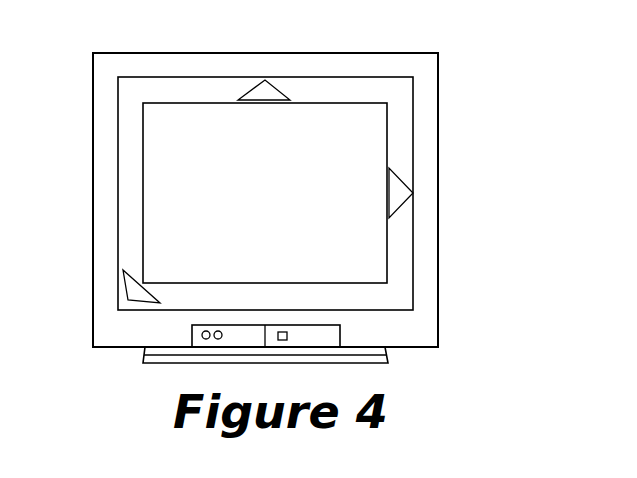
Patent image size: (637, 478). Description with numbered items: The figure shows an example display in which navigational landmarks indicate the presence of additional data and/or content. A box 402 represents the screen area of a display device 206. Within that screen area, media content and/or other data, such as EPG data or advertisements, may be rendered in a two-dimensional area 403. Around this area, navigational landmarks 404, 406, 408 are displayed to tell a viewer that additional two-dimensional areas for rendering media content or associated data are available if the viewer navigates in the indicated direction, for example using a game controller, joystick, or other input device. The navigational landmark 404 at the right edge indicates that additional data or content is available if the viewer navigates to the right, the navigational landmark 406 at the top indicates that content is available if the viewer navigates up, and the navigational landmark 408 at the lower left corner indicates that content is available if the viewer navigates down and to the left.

The screen area 402 is at (403, 128).
The two-dimensional area 403 is at (162, 282).
The navigational landmark 404 is at (402, 192).
The navigational landmark 406 is at (265, 92).
The navigational landmark 408 is at (126, 296).
The display device 206 is at (182, 342).